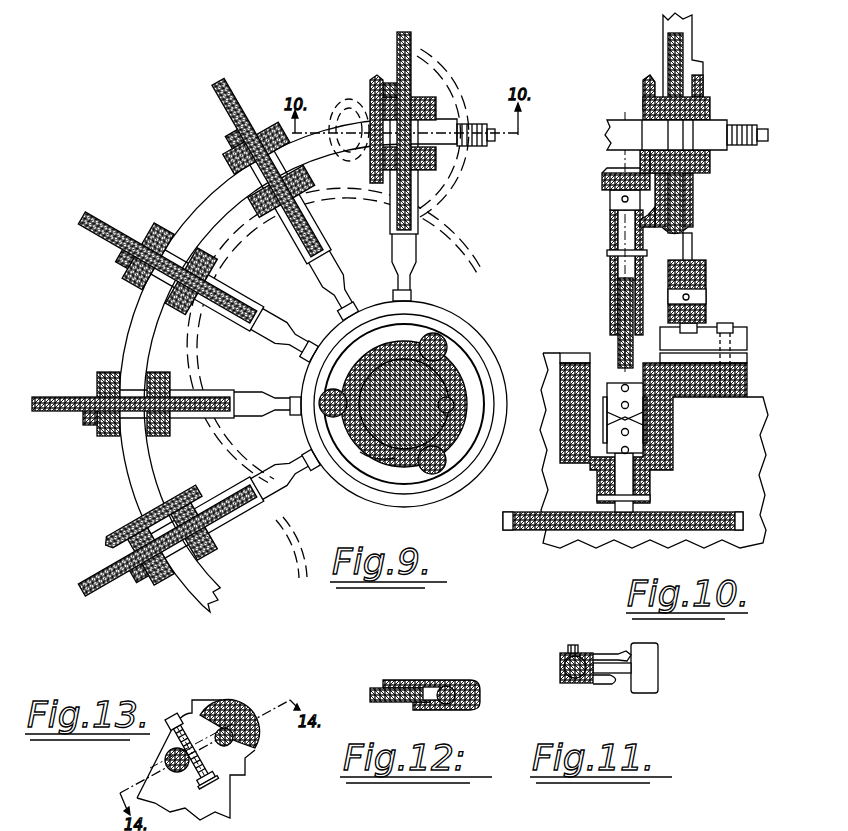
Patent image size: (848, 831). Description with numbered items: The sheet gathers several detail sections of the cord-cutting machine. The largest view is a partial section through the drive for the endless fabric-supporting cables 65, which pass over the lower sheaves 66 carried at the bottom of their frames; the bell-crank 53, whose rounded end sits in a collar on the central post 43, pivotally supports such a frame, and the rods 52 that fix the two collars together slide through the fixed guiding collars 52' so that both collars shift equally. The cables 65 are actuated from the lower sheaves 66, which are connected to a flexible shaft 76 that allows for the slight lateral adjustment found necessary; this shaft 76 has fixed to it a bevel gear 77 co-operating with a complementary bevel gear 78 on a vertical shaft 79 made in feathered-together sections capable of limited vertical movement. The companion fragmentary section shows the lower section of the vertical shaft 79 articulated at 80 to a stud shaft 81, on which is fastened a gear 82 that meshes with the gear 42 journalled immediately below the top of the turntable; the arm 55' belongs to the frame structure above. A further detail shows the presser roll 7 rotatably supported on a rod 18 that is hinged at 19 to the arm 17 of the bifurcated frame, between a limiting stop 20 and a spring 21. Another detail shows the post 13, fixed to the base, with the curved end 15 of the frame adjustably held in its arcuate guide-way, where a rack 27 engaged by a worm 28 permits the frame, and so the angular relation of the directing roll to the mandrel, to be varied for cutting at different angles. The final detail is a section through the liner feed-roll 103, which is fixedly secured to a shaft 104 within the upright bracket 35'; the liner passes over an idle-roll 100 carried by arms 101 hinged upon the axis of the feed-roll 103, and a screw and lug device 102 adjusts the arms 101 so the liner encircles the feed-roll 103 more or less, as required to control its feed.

In FIG. 11, the presser roll 7 is at (658, 668).
In FIG. 12, the post 13 is at (477, 681).
In FIG. 12, the curved end 15 is at (373, 696).
In FIG. 11, the arm 17 is at (566, 657).
In FIG. 11, the rod 18 is at (620, 675).
In FIG. 11, the hinge 19 is at (563, 669).
In FIG. 11, the limiting stop 20 is at (590, 685).
In FIG. 11, the spring 21 is at (608, 652).
In FIG. 12, the rack 27 is at (430, 687).
In FIG. 12, the worm 28 is at (449, 687).
In FIG. 13, the upright bracket 35' is at (206, 760).
In FIG. 9, the gear 42 is at (466, 252).
In FIG. 9, the post 43 is at (430, 387).
In FIG. 9, the rods 52 is at (395, 408).
In FIG. 9, the guiding collars 52' is at (355, 481).
In FIG. 10, the bell-crank 53 is at (694, 218).
In FIG. 10, the arm 55' is at (700, 55).
In FIG. 9, the cables 65 is at (235, 76).
In FIG. 10, the cables 65 is at (692, 267).
In FIG. 9, the lower sheaves 66 is at (230, 111).
In FIG. 10, the lower sheaves 66 is at (665, 55).
In FIG. 9, the flexible shaft 76 is at (136, 325).
In FIG. 10, the flexible shaft 76 is at (622, 126).
In FIG. 9, the bevel gear 77 is at (378, 81).
In FIG. 10, the bevel gear 77 is at (645, 92).
In FIG. 9, the bevel gear 78 is at (334, 114).
In FIG. 10, the bevel gear 78 is at (603, 178).
In FIG. 10, the vertical shaft 79 is at (618, 237).
In FIG. 10, the articulation 80 is at (610, 413).
In FIG. 10, the stud shaft 81 is at (600, 487).
In FIG. 9, the gear 82 is at (457, 78).
In FIG. 10, the gear 82 is at (716, 512).
In FIG. 13, the idle-roll 100 is at (165, 761).
In FIG. 13, the arms 101 is at (193, 722).
In FIG. 13, the screw and lug device 102 is at (200, 783).
In FIG. 13, the liner feed-roll 103 is at (238, 708).
In FIG. 13, the shaft 104 is at (240, 737).